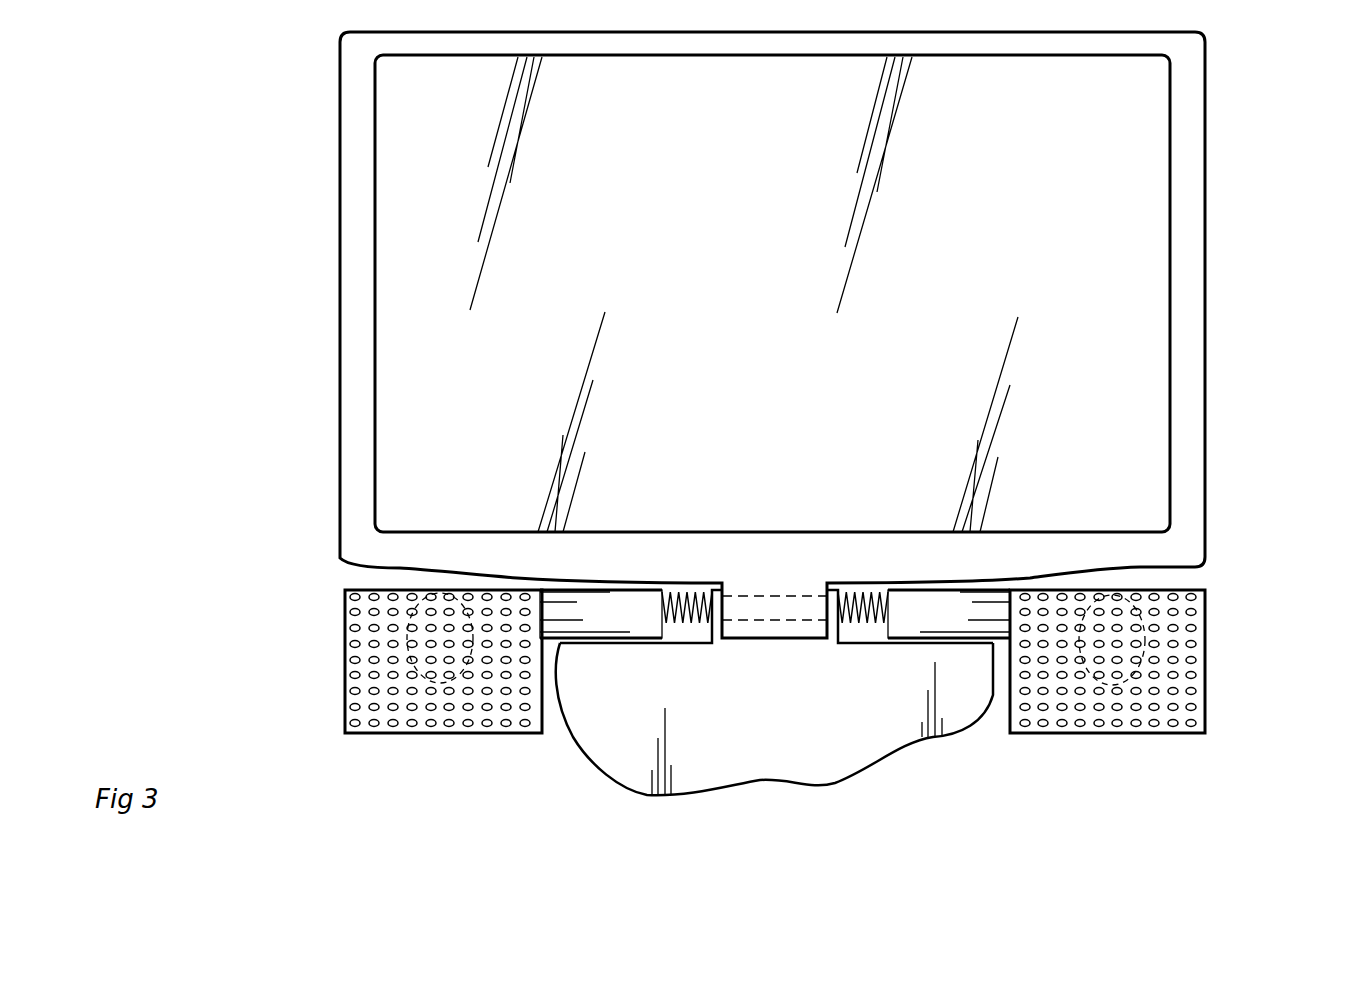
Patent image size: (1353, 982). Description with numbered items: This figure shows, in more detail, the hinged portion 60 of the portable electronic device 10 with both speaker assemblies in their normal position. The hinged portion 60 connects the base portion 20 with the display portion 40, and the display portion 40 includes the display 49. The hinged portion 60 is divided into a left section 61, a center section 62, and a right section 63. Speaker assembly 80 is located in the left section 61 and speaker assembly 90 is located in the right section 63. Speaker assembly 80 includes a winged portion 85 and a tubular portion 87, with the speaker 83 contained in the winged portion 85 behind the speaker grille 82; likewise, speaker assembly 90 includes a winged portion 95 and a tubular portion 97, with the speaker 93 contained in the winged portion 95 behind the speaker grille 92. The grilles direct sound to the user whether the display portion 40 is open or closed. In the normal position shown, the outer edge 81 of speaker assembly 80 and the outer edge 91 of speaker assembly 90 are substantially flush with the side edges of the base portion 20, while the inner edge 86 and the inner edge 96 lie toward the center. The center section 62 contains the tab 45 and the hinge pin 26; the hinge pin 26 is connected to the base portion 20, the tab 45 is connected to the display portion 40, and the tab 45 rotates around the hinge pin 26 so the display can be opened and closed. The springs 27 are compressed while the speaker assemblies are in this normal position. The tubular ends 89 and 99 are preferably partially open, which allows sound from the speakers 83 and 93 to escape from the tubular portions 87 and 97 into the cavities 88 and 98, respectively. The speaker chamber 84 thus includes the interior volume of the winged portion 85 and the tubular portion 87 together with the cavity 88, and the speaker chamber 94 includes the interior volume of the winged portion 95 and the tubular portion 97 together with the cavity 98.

The electronic device 10 is at (1277, 396).
The base portion 20 is at (755, 751).
The hinge pin 26 is at (803, 597).
The springs 27 is at (703, 627).
The display portion 40 is at (340, 418).
The tab 45 is at (768, 592).
The display 49 is at (760, 308).
The hinged portion 60 is at (405, 663).
The left section 61 is at (430, 583).
The center section 62 is at (745, 583).
The right section 63 is at (1118, 582).
The speaker assembly 80 is at (517, 582).
The outer edge 81 is at (347, 690).
The speaker grille 82 is at (347, 623).
The speaker 83 is at (408, 640).
The speaker chamber 84 is at (605, 625).
The winged portion 85 is at (420, 723).
The inner edge 86 is at (542, 705).
The tubular portion 87 is at (635, 595).
The cavity 88 is at (677, 632).
The tubular end 89 is at (665, 595).
The speaker assembly 90 is at (1028, 581).
The outer edge 91 is at (1207, 685).
The speaker grille 92 is at (1205, 623).
The speaker 93 is at (1197, 653).
The speaker chamber 94 is at (920, 625).
The winged portion 95 is at (1128, 723).
The inner edge 96 is at (1010, 713).
The tubular portion 97 is at (912, 595).
The cavity 98 is at (873, 632).
The tubular end 99 is at (887, 588).